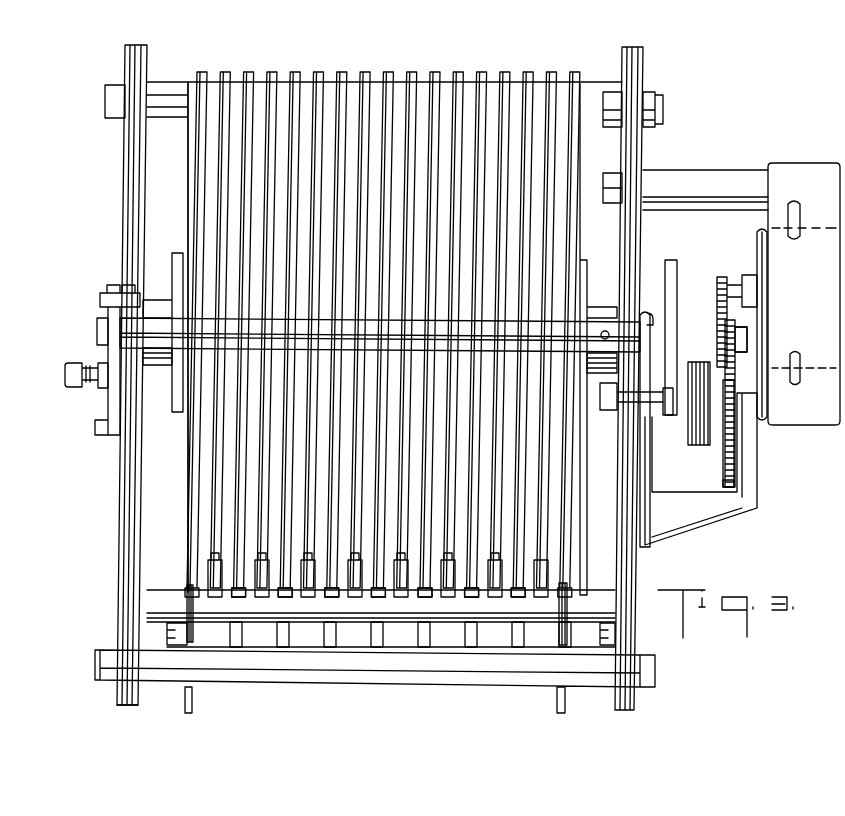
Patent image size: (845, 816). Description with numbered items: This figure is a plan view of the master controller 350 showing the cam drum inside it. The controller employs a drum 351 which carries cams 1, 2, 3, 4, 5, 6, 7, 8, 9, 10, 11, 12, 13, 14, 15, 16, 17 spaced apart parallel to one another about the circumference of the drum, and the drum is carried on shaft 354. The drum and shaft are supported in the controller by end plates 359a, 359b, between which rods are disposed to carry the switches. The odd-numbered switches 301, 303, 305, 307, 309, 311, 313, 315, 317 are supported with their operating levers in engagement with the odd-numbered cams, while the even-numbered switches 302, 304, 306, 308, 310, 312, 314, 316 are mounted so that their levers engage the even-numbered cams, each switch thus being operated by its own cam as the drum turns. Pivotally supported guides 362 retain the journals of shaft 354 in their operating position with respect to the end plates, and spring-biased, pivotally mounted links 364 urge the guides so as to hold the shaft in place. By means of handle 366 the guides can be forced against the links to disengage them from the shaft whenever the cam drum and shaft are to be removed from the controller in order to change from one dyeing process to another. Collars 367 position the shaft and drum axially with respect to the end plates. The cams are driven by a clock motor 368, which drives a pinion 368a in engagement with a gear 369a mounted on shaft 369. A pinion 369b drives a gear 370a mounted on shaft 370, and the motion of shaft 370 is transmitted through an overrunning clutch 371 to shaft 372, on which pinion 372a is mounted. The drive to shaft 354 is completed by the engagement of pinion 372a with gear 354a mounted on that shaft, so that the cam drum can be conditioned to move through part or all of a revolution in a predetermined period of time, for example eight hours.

The master controller 350 is at (106, 512).
The drum 351 is at (186, 77).
The cam 1 is at (206, 72).
The cam 2 is at (229, 71).
The cam 3 is at (252, 71).
The cam 4 is at (275, 71).
The cam 5 is at (299, 71).
The cam 6 is at (322, 71).
The cam 7 is at (345, 71).
The cam 8 is at (369, 71).
The cam 9 is at (392, 71).
The cam 10 is at (417, 71).
The cam 11 is at (440, 71).
The cam 12 is at (464, 71).
The cam 13 is at (487, 71).
The cam 14 is at (510, 71).
The cam 15 is at (533, 71).
The cam 16 is at (556, 71).
The cam 17 is at (580, 71).
The switch 301 is at (187, 590).
The switch 302 is at (216, 586).
The switch 303 is at (238, 592).
The switch 304 is at (263, 586).
The switch 305 is at (285, 592).
The switch 306 is at (310, 586).
The switch 307 is at (332, 592).
The switch 308 is at (356, 586).
The switch 309 is at (380, 592).
The switch 310 is at (402, 586).
The switch 311 is at (428, 592).
The switch 312 is at (450, 586).
The switch 313 is at (474, 592).
The switch 314 is at (496, 586).
The switch 315 is at (522, 592).
The switch 316 is at (548, 570).
The switch 317 is at (567, 595).
The shaft 354 is at (100, 335).
The gear 354a is at (669, 261).
The end plate 359a is at (125, 191).
The end plate 359b is at (640, 153).
The guide 362 is at (104, 315).
The link 364 is at (110, 392).
The handle 366 is at (160, 318).
The collar 367 is at (154, 365).
The clock motor 368 is at (760, 247).
The pinion 368a is at (722, 277).
The shaft 369 is at (715, 403).
The gear 369a is at (720, 312).
The pinion 369b is at (742, 352).
The shaft 370 is at (722, 438).
The gear 370a is at (728, 485).
The overrunning clutch 371 is at (691, 444).
The shaft 372 is at (660, 395).
The pinion 372a is at (668, 418).